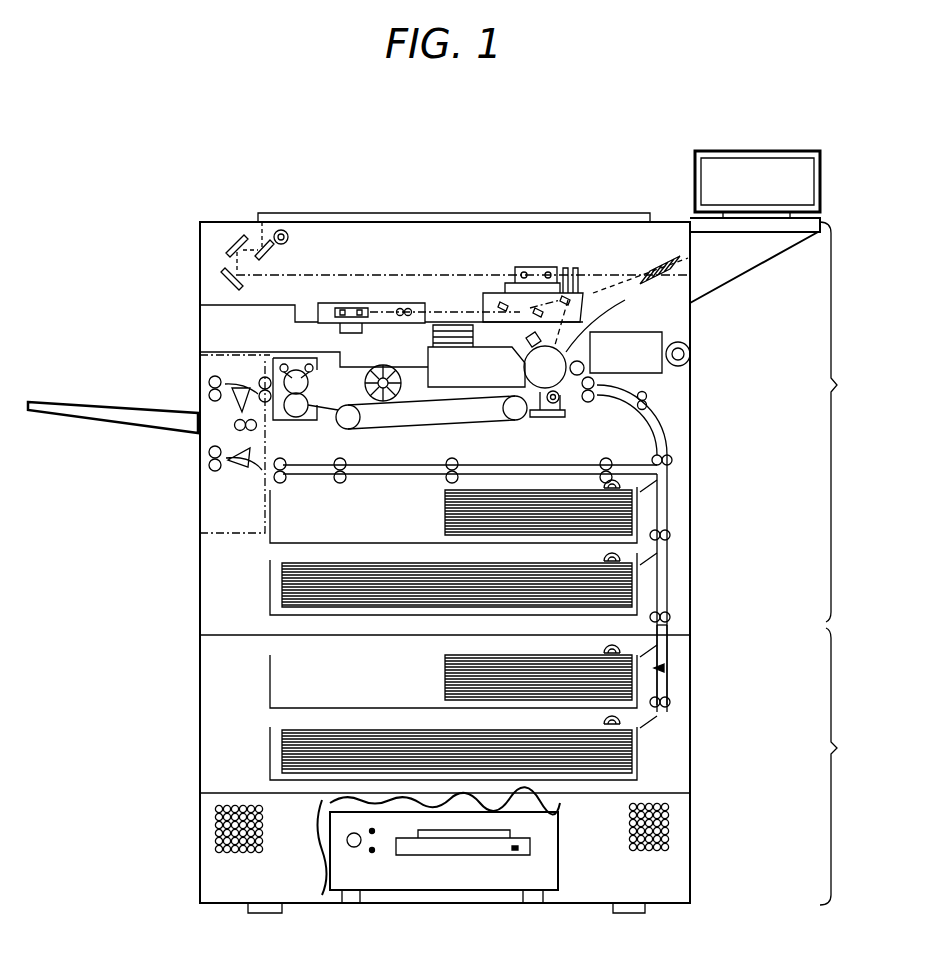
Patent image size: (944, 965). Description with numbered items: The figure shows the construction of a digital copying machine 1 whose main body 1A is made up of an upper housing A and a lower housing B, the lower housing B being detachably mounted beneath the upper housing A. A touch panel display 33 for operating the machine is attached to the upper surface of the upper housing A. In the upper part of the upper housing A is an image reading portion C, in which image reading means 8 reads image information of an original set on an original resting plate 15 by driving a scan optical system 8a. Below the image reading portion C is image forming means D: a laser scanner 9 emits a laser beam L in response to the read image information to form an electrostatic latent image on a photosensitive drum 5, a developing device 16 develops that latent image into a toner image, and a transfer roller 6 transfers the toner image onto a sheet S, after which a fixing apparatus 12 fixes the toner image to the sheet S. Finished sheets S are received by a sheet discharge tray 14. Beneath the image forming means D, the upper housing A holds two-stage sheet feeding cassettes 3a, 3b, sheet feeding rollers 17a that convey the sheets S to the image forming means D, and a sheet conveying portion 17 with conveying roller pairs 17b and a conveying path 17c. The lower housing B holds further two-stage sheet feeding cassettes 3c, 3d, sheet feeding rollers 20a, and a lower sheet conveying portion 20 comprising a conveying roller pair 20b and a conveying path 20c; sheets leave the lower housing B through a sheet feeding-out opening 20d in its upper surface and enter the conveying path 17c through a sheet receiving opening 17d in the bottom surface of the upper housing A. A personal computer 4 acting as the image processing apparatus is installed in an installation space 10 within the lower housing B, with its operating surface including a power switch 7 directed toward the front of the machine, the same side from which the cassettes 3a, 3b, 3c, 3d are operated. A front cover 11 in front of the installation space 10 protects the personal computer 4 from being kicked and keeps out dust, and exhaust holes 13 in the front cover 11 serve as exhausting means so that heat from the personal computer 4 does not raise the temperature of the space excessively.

The digital copying machine 1 is at (611, 197).
The main body 1A is at (186, 500).
The sheet feeding cassette 3a is at (268, 540).
The sheet feeding cassette 3b is at (268, 600).
The sheet feeding cassette 3c is at (268, 703).
The sheet feeding cassette 3d is at (268, 762).
The personal computer 4 is at (470, 890).
The photosensitive drum 5 is at (582, 345).
The transfer roller 6 is at (565, 402).
The power switch 7 is at (358, 848).
The image reading means 8 is at (214, 232).
The scan optical system 8a is at (282, 258).
The laser scanner 9 is at (385, 303).
The installation space 10 is at (415, 903).
The front cover 11 is at (568, 897).
The fixing apparatus 12 is at (292, 358).
The exhaust holes 13 is at (215, 818).
The sheet discharge tray 14 is at (132, 408).
The original resting plate 15 is at (310, 213).
The developing device 16 is at (690, 340).
The sheet conveying portion 17 is at (684, 437).
The sheet feeding rollers 17a is at (640, 492).
The conveying roller pairs 17b is at (641, 410).
The conveying path 17c is at (670, 405).
The sheet receiving opening 17d is at (670, 617).
The lower sheet conveying portion 20 is at (672, 672).
The sheet feeding rollers 20a is at (670, 646).
The conveying roller pair 20b is at (670, 712).
The conveying path 20c is at (670, 703).
The sheet feeding-out opening 20d is at (670, 626).
The touch panel display 33 is at (757, 151).
The upper housing A is at (837, 422).
The lower housing B is at (837, 766).
The image reading portion C is at (502, 248).
The image forming means D is at (642, 328).
The laser beam L is at (462, 312).
The sheet S is at (445, 493).